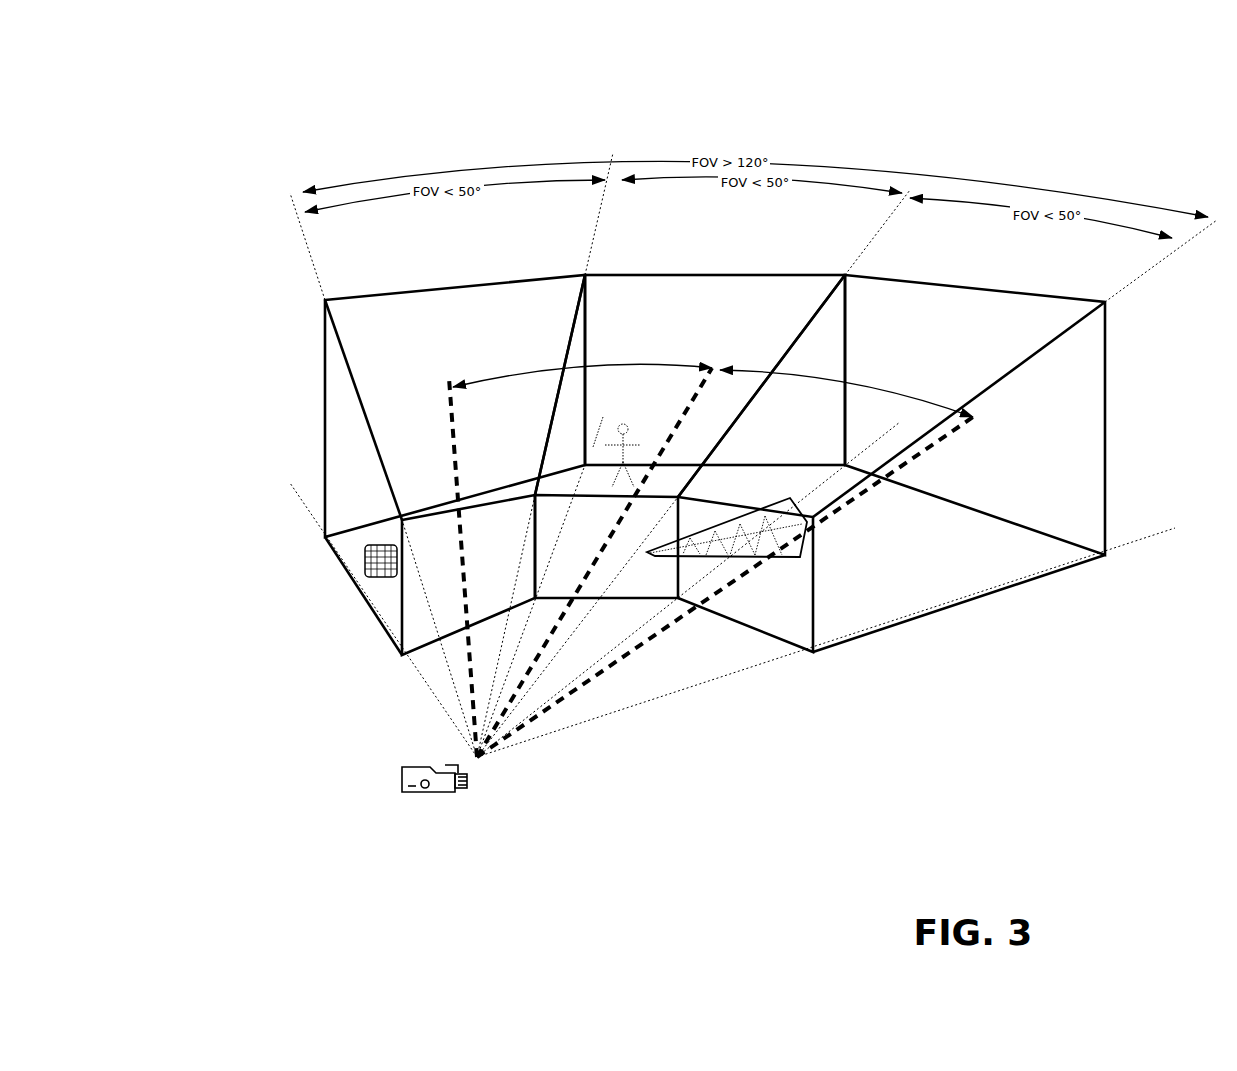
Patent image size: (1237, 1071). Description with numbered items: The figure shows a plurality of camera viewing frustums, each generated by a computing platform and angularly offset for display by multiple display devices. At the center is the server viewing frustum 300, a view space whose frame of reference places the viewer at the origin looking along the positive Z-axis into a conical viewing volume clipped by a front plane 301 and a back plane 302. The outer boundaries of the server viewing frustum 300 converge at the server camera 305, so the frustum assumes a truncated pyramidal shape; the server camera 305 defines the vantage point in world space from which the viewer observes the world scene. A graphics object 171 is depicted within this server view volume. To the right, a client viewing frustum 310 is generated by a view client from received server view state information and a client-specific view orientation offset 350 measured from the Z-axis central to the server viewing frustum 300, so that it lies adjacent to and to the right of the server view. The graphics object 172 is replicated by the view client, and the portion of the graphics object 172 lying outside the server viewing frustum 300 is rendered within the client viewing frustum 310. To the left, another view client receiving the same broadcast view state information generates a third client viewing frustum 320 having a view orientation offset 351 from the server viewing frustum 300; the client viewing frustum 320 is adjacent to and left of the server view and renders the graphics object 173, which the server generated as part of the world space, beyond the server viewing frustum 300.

The server viewing frustum 300 is at (690, 318).
The front plane 301 is at (606, 546).
The back plane 302 is at (700, 353).
The server camera 305 is at (424, 830).
The client viewing frustum 310 is at (815, 660).
The client viewing frustum 320 is at (385, 525).
The view orientation offset 350 is at (911, 408).
The view orientation offset 351 is at (656, 386).
The person object 171 is at (632, 430).
The graphics object 172 is at (817, 547).
The graphics object 173 is at (365, 565).